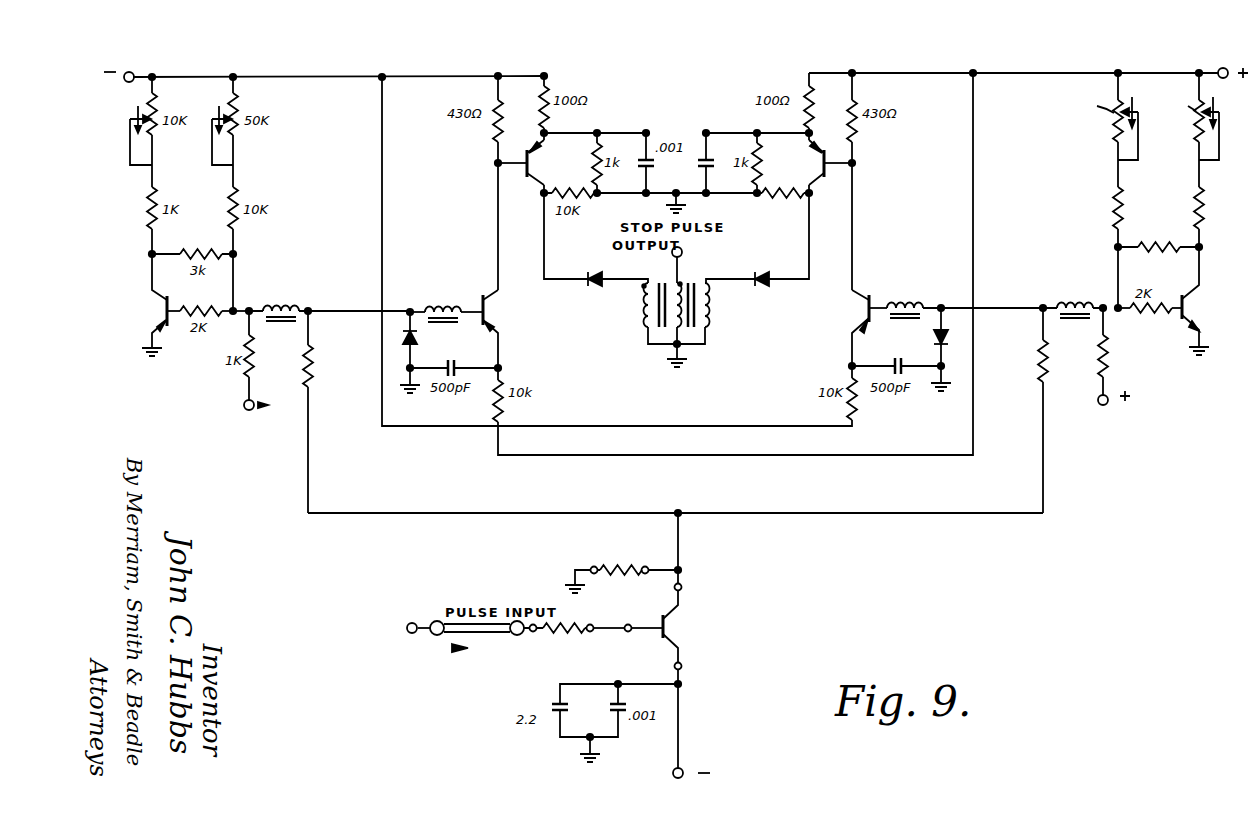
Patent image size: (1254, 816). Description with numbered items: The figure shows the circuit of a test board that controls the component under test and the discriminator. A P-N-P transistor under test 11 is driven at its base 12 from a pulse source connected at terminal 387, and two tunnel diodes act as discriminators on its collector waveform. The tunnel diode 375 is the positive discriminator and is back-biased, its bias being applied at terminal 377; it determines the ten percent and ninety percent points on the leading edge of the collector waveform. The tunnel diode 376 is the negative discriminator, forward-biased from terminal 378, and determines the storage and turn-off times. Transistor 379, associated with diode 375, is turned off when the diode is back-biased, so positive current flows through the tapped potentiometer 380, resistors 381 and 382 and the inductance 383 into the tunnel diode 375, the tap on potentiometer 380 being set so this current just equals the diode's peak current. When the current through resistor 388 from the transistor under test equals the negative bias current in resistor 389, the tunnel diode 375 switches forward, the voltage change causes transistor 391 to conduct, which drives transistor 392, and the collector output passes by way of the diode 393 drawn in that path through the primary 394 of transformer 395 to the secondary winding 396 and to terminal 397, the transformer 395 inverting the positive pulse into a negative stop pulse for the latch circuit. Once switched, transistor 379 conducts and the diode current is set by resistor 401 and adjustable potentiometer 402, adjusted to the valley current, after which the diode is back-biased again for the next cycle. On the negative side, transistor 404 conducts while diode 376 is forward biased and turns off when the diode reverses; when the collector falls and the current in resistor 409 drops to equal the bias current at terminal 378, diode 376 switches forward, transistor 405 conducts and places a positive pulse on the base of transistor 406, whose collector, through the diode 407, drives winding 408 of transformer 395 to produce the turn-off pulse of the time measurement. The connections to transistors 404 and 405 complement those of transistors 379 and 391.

The terminal 378 is at (133, 73).
The terminal 377 is at (1220, 68).
The adjustable potentiometer 402 is at (1112, 132).
The potentiometer resistor 380 is at (1196, 142).
The resistor 401 is at (1112, 210).
The resistor 381 is at (1194, 217).
The resistor 382 is at (1174, 244).
The inductance 383 is at (1082, 302).
The transistor 379 is at (1202, 306).
The resistor 389 is at (1108, 352).
The resistor 388 is at (1048, 362).
The transistor 391 is at (874, 301).
The tunnel diode 375 is at (933, 337).
The transistor 392 is at (820, 162).
The diode 393 is at (764, 285).
The primary winding 394 is at (716, 318).
The transformer 395 is at (686, 290).
The secondary winding 396 is at (672, 332).
The terminal 397 is at (683, 251).
The transistor 406 is at (533, 162).
The diode 407 is at (592, 276).
The winding 408 is at (641, 313).
The transistor 405 is at (487, 303).
The tunnel diode 376 is at (417, 339).
The transistor 404 is at (158, 311).
The resistor 409 is at (306, 358).
The transistor under test 11 is at (668, 628).
The base 12 is at (660, 640).
The terminal 387 is at (408, 635).